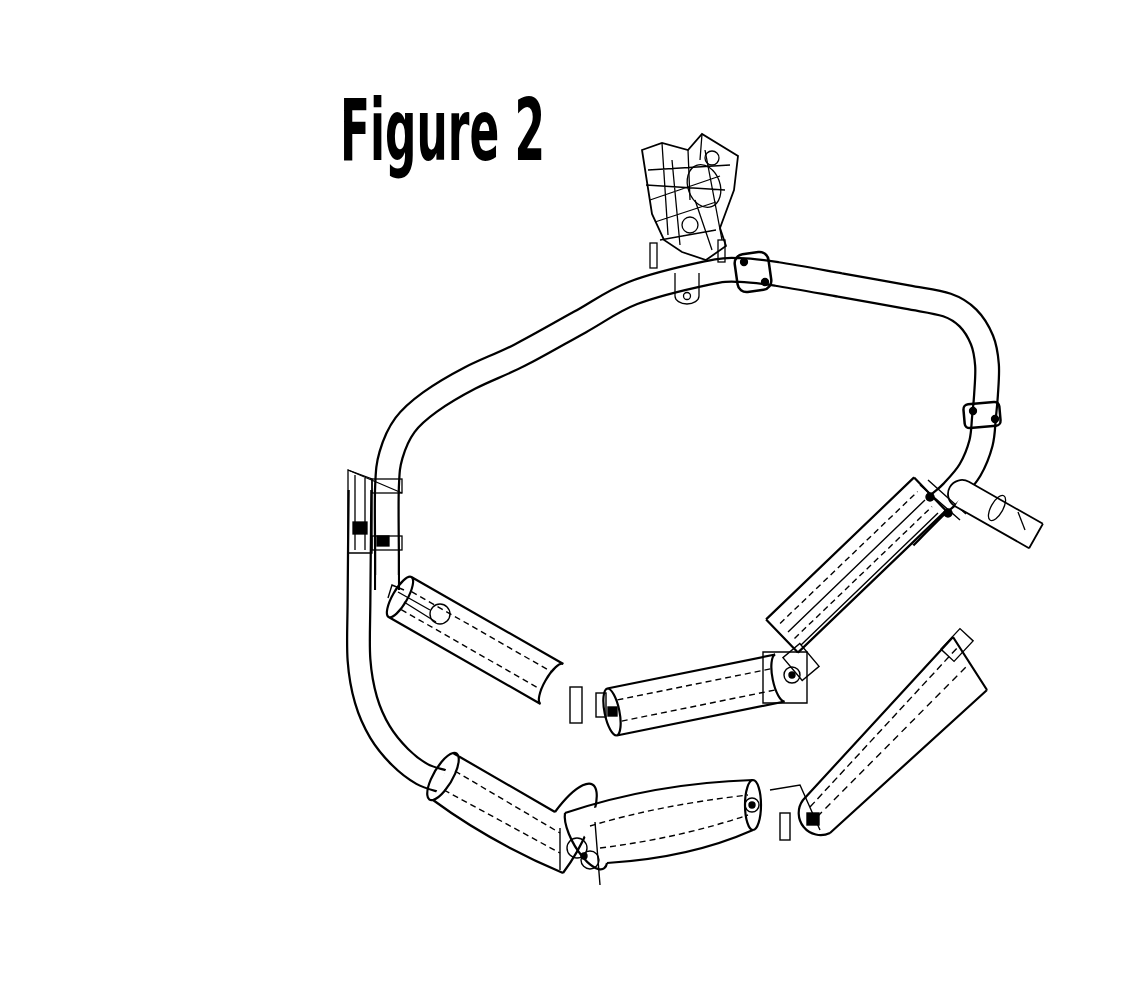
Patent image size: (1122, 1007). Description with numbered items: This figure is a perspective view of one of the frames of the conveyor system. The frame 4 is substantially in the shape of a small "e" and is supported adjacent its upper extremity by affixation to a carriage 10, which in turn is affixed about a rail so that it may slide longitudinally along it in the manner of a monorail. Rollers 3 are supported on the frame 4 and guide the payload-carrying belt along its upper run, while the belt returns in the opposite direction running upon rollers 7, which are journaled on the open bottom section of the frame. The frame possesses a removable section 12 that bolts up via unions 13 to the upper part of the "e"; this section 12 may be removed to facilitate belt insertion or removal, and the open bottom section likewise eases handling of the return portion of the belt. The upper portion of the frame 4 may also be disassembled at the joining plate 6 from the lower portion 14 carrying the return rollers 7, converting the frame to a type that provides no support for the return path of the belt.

The rollers 3 is at (823, 573).
The frame 4 is at (513, 350).
The joining plate 6 is at (347, 487).
The rollers 7 is at (900, 757).
The carriage 10 is at (738, 153).
The removable section 12 is at (972, 306).
The unions 13 is at (770, 255).
The lower portion 14 is at (353, 603).